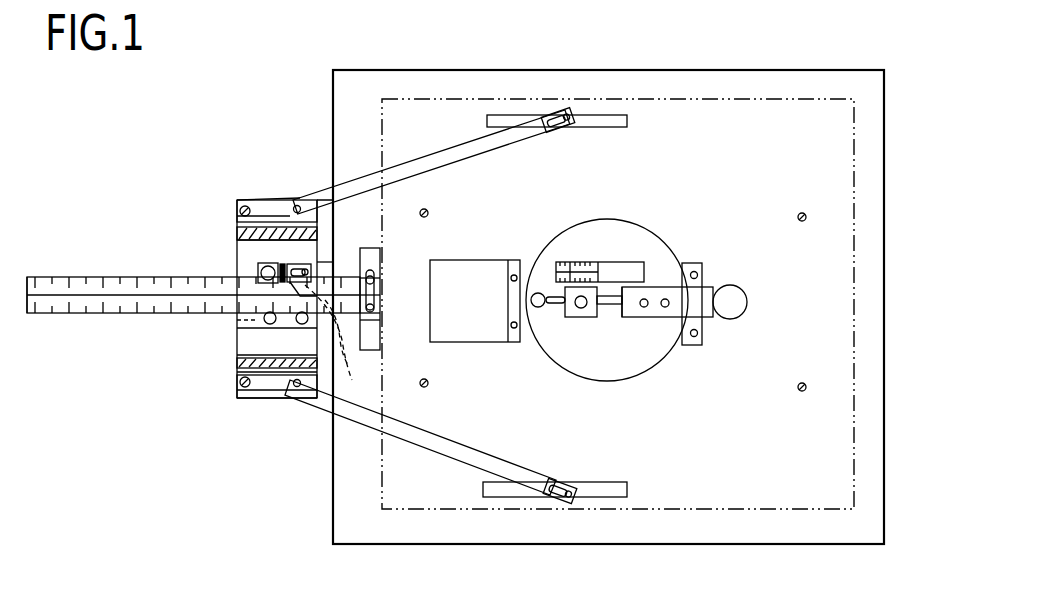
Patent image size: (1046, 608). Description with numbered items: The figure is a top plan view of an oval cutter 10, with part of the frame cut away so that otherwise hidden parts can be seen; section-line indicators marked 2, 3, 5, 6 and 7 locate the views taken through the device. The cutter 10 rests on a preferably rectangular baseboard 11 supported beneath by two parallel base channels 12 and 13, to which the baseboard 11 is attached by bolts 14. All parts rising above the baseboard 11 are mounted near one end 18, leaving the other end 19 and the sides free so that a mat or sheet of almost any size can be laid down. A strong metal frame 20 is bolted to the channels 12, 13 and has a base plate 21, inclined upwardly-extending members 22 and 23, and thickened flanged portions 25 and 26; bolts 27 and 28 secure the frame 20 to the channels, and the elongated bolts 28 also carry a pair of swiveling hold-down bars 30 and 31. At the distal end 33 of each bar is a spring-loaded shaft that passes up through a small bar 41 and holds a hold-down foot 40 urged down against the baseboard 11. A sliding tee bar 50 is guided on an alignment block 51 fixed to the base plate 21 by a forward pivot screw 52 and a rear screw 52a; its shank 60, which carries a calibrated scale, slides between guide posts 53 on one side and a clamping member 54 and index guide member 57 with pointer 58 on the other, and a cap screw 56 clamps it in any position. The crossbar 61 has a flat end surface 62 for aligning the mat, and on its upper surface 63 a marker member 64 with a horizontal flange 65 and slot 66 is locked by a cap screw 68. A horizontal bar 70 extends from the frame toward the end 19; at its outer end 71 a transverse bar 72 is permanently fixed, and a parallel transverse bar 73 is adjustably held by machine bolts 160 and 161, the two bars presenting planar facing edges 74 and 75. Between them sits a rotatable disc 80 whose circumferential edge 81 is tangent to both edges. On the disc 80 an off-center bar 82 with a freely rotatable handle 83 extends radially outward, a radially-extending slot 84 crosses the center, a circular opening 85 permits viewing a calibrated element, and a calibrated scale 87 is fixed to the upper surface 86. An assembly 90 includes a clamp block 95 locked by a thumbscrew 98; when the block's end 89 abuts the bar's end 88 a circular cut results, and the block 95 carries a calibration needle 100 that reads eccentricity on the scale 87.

The oval cutter 10 is at (272, 85).
The baseboard 11 is at (828, 80).
The base channel 12 is at (245, 399).
The base channel 13 is at (269, 200).
The bolt 14 is at (799, 383).
The end of baseboard 18 is at (332, 470).
The end of baseboard 19 is at (884, 478).
The frame 20 is at (206, 233).
The base plate 21 is at (266, 353).
The upwardly-extending member 22 is at (238, 363).
The upwardly-extending member 23 is at (238, 231).
The flanged portion 25 is at (272, 397).
The flanged portion 26 is at (258, 207).
The bolt 27 is at (243, 205).
The bolt 28 is at (294, 205).
The hold-down bar 30 is at (470, 442).
The hold-down bar 31 is at (455, 150).
The distal end of hold-down bar 33 is at (568, 116).
The hold-down foot 40 is at (628, 124).
The small bar 41 is at (543, 128).
The tee bar 50 is at (106, 262).
The alignment block 51 is at (238, 337).
The screw 52 is at (350, 372).
The screw 52a is at (236, 320).
The guide post 53 is at (302, 325).
The clamping member 54 is at (306, 266).
The cap screw 56 is at (260, 273).
The index guide member 57 is at (320, 272).
The pointer 58 is at (348, 355).
The shank 60 is at (62, 313).
The crossbar 61 is at (381, 340).
The flat end surface 62 is at (381, 262).
The upper surface of crossbar 63 is at (605, 298).
The marker member 64 is at (381, 284).
The horizontal flange 65 is at (381, 320).
The slot 66 is at (374, 304).
The cap screw 68 is at (369, 275).
The horizontal bar 70 is at (455, 311).
The outer end of horizontal bar 71 is at (703, 270).
The transverse bar 72 is at (693, 264).
The transverse bar 73 is at (508, 262).
The planar facing edge 74 is at (683, 264).
The planar facing edge 75 is at (536, 292).
The rotatable disc 80 is at (655, 355).
The circumferential edge 81 is at (630, 380).
The bar 82 is at (710, 315).
The handle 83 is at (733, 318).
The radially-extending slot 84 is at (610, 300).
The circular opening 85 is at (540, 292).
The upper surface of disc 86 is at (620, 376).
The calibrated scale 87 is at (604, 262).
The end of bar 88 is at (622, 318).
The end of clamp block 89 is at (605, 305).
The assembly 90 is at (628, 208).
The clamp block 95 is at (578, 312).
The thumbscrew 98 is at (539, 310).
The calibration needle 100 is at (558, 262).
The machine bolt 160 is at (510, 278).
The machine bolt 161 is at (510, 326).
The section line 2 is at (22, 565).
The section line 3 is at (802, 185).
The section line 5 is at (483, 515).
The section line 6 is at (494, 303).
The section line 7 is at (580, 212).